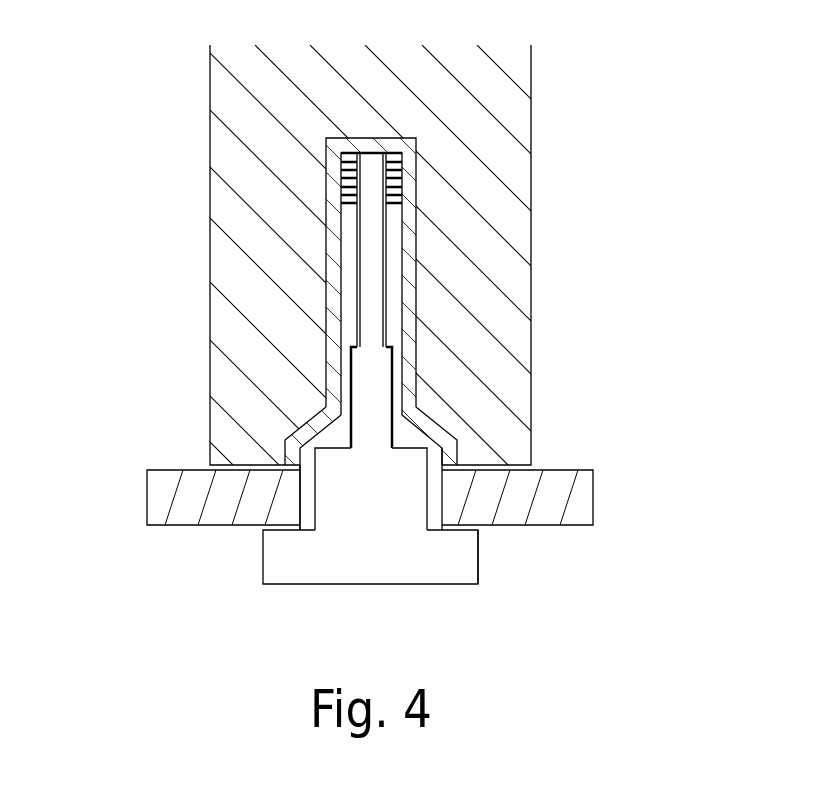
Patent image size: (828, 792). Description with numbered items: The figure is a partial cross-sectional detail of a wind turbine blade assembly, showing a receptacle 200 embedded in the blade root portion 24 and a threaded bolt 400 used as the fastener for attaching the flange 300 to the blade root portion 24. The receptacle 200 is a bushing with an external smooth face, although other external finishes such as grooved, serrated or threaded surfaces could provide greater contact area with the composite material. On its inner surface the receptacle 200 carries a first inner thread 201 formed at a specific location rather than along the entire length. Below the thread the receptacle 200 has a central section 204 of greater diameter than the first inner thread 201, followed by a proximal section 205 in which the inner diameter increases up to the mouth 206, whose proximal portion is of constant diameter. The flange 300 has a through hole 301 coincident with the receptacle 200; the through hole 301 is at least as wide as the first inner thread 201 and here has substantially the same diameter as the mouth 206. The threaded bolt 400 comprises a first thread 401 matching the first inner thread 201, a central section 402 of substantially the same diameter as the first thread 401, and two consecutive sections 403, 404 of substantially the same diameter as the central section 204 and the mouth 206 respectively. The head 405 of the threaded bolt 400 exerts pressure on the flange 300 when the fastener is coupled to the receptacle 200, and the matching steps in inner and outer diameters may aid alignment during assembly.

The blade root portion 24 is at (230, 95).
The receptacle 200 is at (360, 150).
The first inner thread 201 is at (345, 176).
The central section 204 is at (333, 243).
The proximal section 205 is at (322, 420).
The mouth 206 is at (290, 453).
The flange 300 is at (176, 495).
The through hole 301 is at (437, 493).
The threaded bolt 400 is at (451, 605).
The first thread 401 is at (397, 165).
The central section 402 is at (367, 258).
The consecutive section 403 is at (378, 366).
The consecutive section 404 is at (418, 462).
The head 405 is at (467, 562).